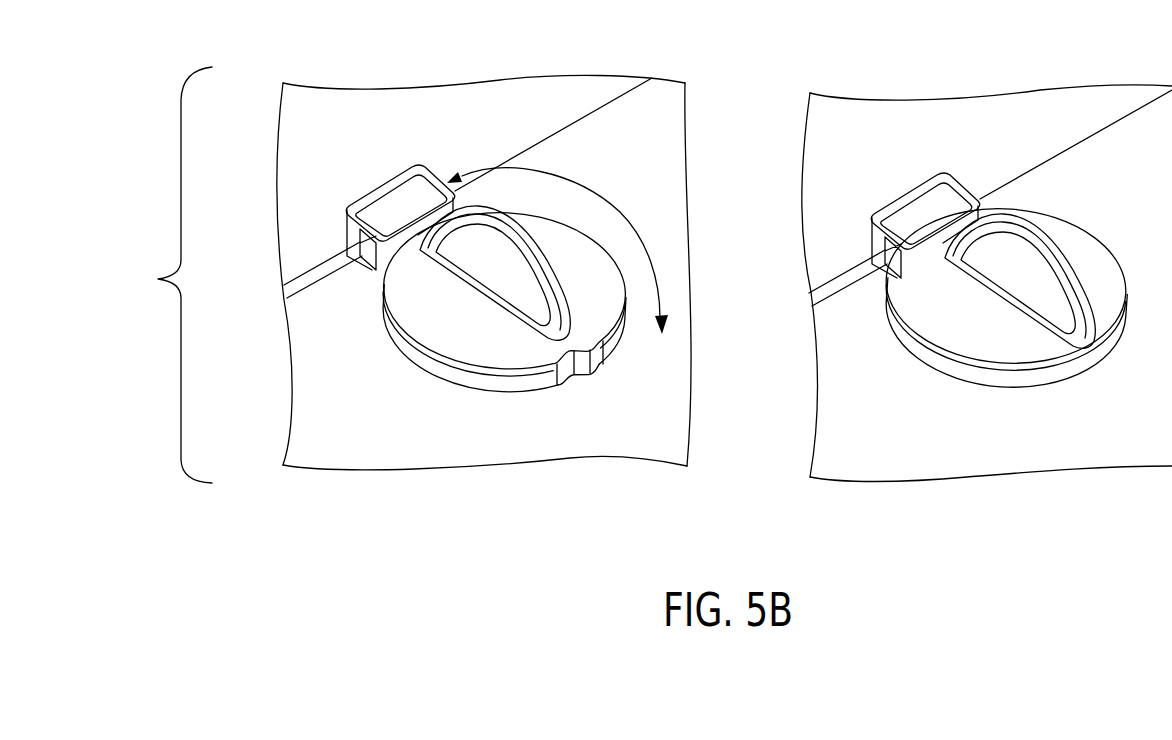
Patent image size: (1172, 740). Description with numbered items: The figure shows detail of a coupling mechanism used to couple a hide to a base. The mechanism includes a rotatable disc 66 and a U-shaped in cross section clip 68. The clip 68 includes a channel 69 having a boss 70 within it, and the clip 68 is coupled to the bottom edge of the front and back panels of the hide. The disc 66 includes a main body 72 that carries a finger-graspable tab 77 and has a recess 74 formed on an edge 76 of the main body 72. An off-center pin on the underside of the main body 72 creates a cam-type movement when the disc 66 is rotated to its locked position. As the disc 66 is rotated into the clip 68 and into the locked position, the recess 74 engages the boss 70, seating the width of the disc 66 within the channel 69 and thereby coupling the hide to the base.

The rotatable disc 66 is at (452, 340).
The U-shaped in cross section clip 68 is at (402, 188).
The channel 69 is at (368, 241).
The boss 70 is at (382, 256).
The main body 72 is at (593, 263).
The recess 74 is at (576, 373).
The edge 76 is at (603, 342).
The finger-graspable tab 77 is at (503, 250).